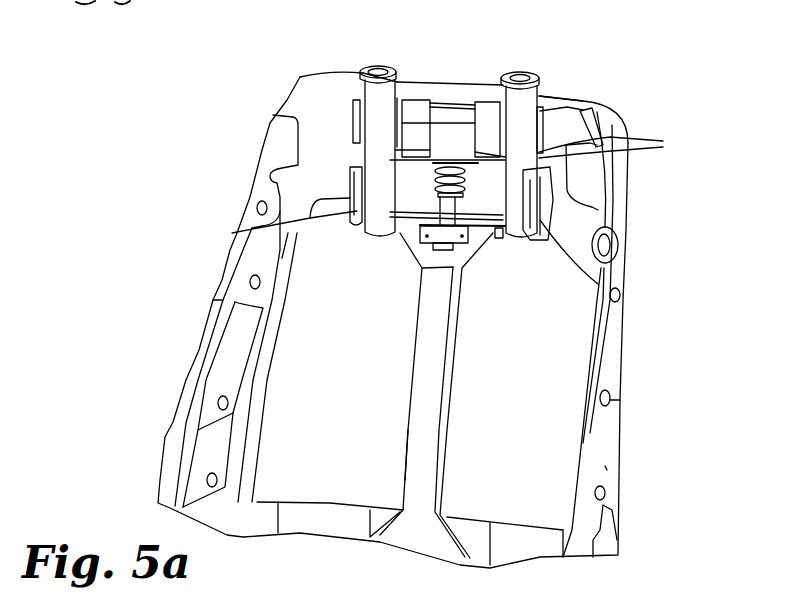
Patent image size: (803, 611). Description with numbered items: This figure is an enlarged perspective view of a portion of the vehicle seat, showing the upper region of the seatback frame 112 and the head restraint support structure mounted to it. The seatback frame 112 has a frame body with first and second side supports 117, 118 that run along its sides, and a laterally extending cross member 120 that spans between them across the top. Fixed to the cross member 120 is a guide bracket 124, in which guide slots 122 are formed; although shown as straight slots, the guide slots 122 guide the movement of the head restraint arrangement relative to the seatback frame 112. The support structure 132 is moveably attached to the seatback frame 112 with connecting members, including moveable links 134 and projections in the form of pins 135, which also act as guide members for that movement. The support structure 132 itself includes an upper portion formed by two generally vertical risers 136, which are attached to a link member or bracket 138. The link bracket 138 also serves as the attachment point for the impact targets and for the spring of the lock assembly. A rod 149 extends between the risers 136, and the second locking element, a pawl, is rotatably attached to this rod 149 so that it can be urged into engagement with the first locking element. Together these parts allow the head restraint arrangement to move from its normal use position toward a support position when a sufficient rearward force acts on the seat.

The seatback frame 112 is at (213, 318).
The first side support 117 is at (193, 368).
The second side support 118 is at (612, 363).
The cross member 120 is at (562, 102).
The guide slot 122 is at (310, 222).
The guide bracket 124 is at (540, 180).
The support structure 132 is at (408, 362).
The moveable link 134 is at (540, 138).
The pin 135 is at (593, 282).
The vertical riser 136 is at (508, 123).
The link bracket 138 is at (408, 427).
The rod 149 is at (497, 233).